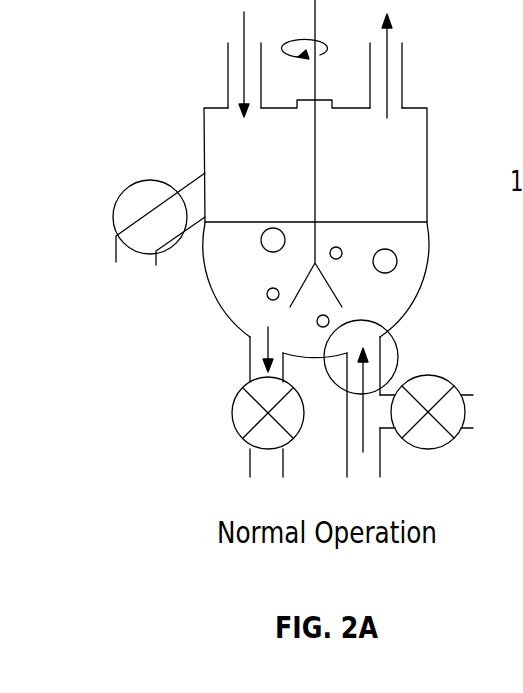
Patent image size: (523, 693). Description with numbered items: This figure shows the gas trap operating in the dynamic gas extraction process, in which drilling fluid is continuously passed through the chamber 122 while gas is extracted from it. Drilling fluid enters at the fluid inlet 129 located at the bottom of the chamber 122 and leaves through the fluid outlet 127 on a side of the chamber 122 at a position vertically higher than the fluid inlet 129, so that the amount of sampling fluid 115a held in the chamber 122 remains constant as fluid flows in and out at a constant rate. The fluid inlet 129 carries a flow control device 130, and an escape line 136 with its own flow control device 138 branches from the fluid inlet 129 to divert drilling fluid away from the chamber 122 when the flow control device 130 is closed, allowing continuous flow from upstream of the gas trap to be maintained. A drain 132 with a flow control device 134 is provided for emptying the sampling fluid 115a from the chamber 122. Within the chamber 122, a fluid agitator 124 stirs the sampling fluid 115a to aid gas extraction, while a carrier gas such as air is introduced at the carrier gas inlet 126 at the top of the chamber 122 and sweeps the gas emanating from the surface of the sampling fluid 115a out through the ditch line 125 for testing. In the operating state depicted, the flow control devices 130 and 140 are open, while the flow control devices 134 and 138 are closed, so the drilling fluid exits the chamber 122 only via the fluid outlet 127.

The chamber 122 is at (428, 132).
The fluid agitator 124 is at (317, 192).
The ditch line 125 is at (402, 95).
The carrier gas inlet 126 is at (228, 92).
The fluid outlet 127 is at (189, 173).
The fluid inlet 129 is at (347, 445).
The flow control device 130 is at (400, 350).
The drain 132 is at (250, 352).
The flow control device 134 is at (242, 437).
The escape line 136 is at (385, 418).
The flow control device 138 is at (448, 378).
The flow control device 140 is at (120, 202).
The sampling fluid 115a is at (229, 297).